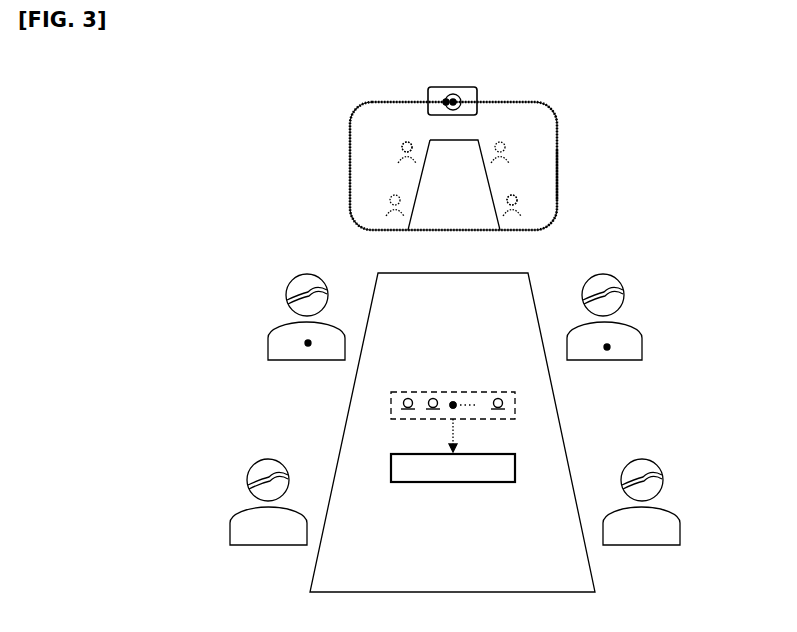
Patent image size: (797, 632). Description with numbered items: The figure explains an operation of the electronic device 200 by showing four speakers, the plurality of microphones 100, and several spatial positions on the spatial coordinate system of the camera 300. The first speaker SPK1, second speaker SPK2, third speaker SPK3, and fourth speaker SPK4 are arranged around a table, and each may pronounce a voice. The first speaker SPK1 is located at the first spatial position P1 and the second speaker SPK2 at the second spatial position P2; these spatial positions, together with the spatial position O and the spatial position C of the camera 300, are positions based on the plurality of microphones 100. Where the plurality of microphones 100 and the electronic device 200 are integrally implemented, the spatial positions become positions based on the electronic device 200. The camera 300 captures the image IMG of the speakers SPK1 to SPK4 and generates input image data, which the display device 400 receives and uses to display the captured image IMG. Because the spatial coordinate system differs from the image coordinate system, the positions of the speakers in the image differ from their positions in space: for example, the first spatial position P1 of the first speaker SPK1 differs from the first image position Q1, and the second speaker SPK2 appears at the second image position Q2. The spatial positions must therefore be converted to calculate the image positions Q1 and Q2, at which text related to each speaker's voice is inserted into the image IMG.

The plurality of microphones 100 is at (517, 405).
The electronic device 200 is at (517, 468).
The camera 300 is at (453, 86).
The display device 400 is at (558, 165).
The image IMG is at (545, 136).
The spatial position of the camera C is at (443, 100).
The spatial position (origin) O is at (453, 396).
The first image position Q1 is at (398, 157).
The second image position Q2 is at (511, 213).
The first speaker SPK1 is at (270, 330).
The second speaker SPK2 is at (642, 333).
The third speaker SPK3 is at (230, 517).
The fourth speaker SPK4 is at (680, 518).
The first spatial position P1 is at (307, 346).
The second spatial position P2 is at (612, 348).